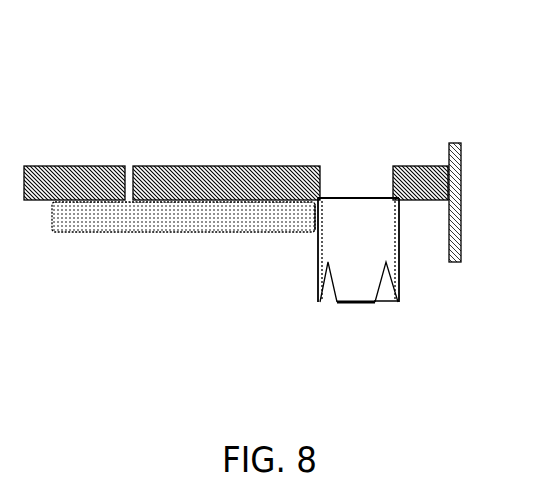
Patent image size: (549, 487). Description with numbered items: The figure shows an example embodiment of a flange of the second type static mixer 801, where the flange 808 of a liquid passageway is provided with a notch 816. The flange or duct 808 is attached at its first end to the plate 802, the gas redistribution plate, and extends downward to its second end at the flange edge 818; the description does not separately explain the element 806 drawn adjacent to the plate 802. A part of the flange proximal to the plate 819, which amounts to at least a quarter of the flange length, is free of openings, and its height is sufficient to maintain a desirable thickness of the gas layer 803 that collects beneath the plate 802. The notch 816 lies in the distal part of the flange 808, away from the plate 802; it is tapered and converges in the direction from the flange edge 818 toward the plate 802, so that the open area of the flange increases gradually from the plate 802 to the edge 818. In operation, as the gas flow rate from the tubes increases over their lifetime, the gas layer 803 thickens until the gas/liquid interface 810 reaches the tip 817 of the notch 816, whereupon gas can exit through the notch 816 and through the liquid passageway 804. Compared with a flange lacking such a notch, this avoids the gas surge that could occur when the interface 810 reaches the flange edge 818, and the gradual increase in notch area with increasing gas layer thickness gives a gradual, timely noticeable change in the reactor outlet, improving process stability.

The second type static mixer 801 is at (146, 105).
The plate 802 is at (136, 177).
The gas layer 803 is at (86, 210).
The second substrate portion 806 is at (191, 186).
The gas/liquid interface 810 is at (121, 233).
The part of the flange proximal to the plate 819 is at (298, 221).
The liquid passageway 804 is at (350, 195).
The flange 808 is at (318, 292).
The notch 816 is at (383, 303).
The tip of the notch 817 is at (388, 264).
The flange edge 818 is at (352, 304).